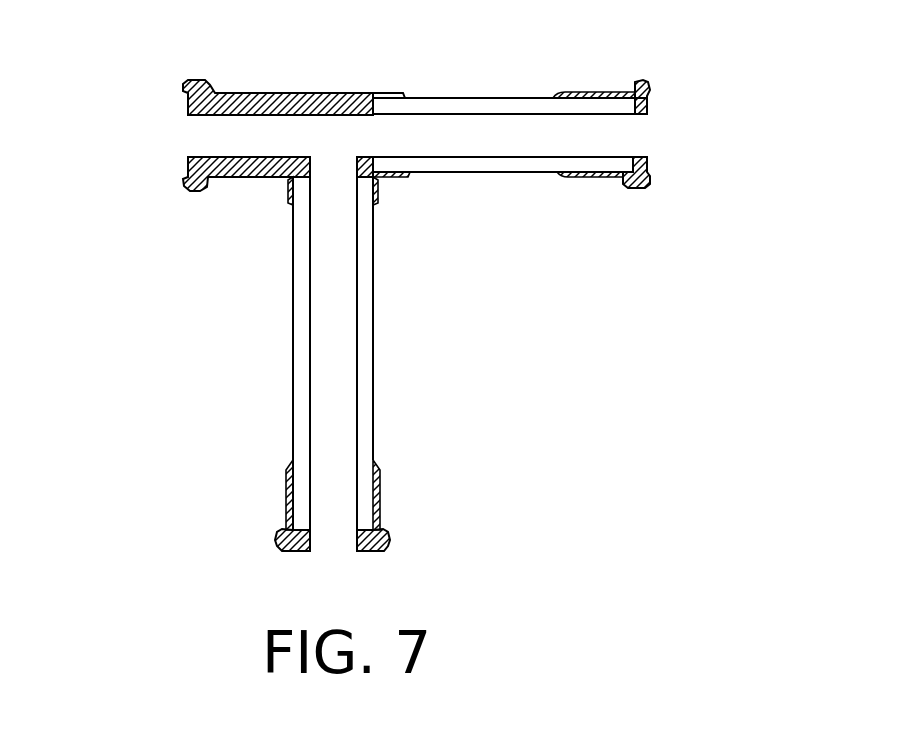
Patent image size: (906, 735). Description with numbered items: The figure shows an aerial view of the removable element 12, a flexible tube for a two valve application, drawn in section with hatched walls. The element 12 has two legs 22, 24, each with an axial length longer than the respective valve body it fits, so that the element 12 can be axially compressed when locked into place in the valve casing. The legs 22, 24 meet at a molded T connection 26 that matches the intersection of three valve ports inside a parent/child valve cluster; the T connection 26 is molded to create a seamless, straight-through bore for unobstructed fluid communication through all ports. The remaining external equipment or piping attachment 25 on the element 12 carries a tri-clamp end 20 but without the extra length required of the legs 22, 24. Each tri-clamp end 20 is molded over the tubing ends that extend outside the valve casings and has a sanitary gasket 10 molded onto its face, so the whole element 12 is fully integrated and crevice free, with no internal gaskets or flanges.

The gasket 10 is at (185, 187).
The removable element 12 is at (505, 223).
The tri-clamp end 20 is at (245, 178).
The leg 22 is at (503, 110).
The leg 24 is at (362, 318).
The external equipment or piping attachment 25 is at (185, 135).
The T connection 26 is at (355, 130).